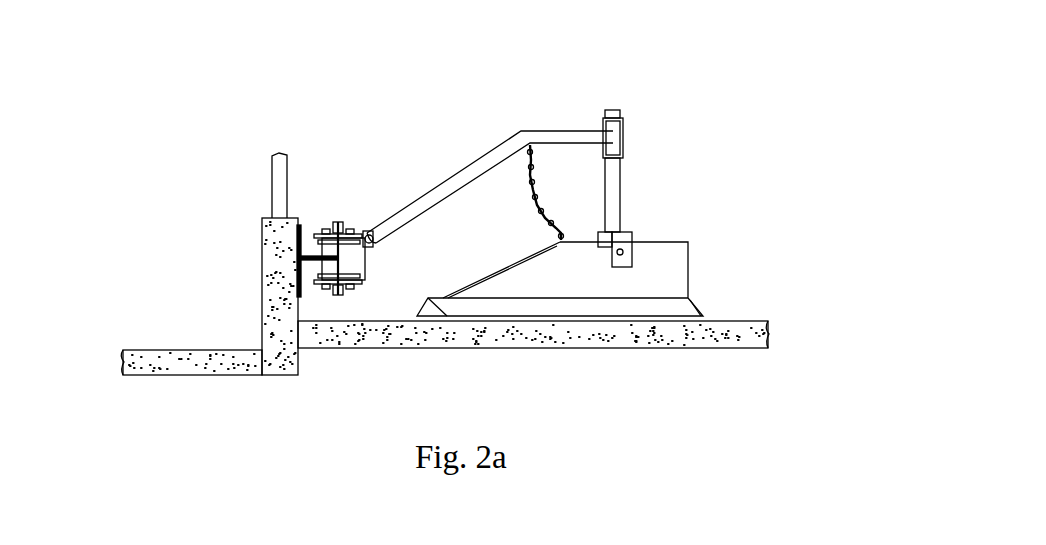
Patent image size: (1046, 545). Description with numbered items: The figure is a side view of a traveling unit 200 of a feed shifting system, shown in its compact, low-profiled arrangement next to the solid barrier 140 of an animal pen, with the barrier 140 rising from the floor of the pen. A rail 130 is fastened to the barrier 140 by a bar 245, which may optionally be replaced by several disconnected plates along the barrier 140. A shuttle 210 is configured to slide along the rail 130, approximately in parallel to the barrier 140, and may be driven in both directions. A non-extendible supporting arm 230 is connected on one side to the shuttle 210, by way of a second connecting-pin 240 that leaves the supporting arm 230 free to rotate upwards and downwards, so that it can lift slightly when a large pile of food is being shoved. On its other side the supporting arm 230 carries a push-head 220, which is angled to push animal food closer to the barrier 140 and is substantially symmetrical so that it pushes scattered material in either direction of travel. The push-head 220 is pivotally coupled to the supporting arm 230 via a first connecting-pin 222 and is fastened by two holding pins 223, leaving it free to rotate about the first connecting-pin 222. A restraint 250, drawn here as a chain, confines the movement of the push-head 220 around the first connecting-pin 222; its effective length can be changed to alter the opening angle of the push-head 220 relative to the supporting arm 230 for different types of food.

The traveling unit 200 is at (291, 121).
The barrier 140 is at (262, 218).
The rail 130 is at (307, 256).
The bar 245 is at (299, 276).
The shuttle 210 is at (372, 230).
The second connecting-pin 240 is at (375, 245).
The supporting arm 230 is at (481, 158).
The restraint 250 is at (546, 218).
The push-head 220 is at (668, 242).
The first connecting-pin 222 is at (615, 110).
The holding pins 223 is at (625, 156).